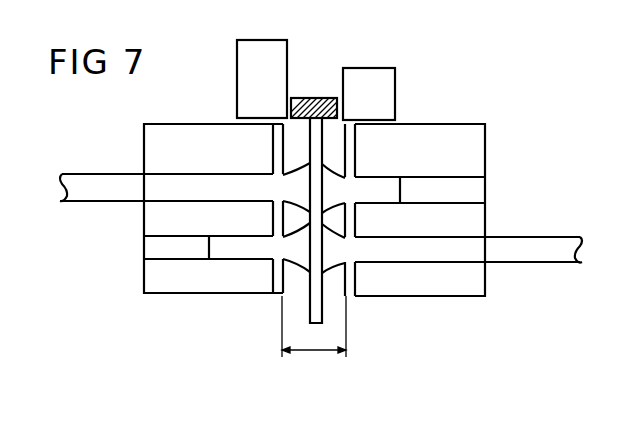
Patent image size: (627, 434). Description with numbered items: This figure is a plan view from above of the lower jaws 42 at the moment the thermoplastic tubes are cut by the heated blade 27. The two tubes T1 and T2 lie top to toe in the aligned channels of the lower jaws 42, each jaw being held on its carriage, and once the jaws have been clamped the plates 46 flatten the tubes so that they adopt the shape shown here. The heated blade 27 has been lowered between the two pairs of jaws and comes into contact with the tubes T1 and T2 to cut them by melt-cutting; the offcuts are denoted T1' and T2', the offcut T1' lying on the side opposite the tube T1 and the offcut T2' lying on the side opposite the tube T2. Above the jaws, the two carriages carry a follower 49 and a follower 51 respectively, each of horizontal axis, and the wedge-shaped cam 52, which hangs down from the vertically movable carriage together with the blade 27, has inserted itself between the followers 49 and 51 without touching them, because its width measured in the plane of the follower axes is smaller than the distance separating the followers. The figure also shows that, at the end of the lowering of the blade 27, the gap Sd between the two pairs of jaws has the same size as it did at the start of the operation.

The lower jaw 42 is at (168, 148).
The plates 46 is at (279, 158).
The heated blade 27 is at (317, 150).
The follower 49 is at (249, 73).
The follower 51 is at (378, 90).
The wedge-shaped cam 52 is at (318, 97).
The thermoplastic tube T1 is at (185, 179).
The offcut T1' is at (406, 149).
The thermoplastic tube T2 is at (452, 244).
The offcut T2' is at (248, 291).
The gap between the pairs of jaws Sd is at (314, 337).